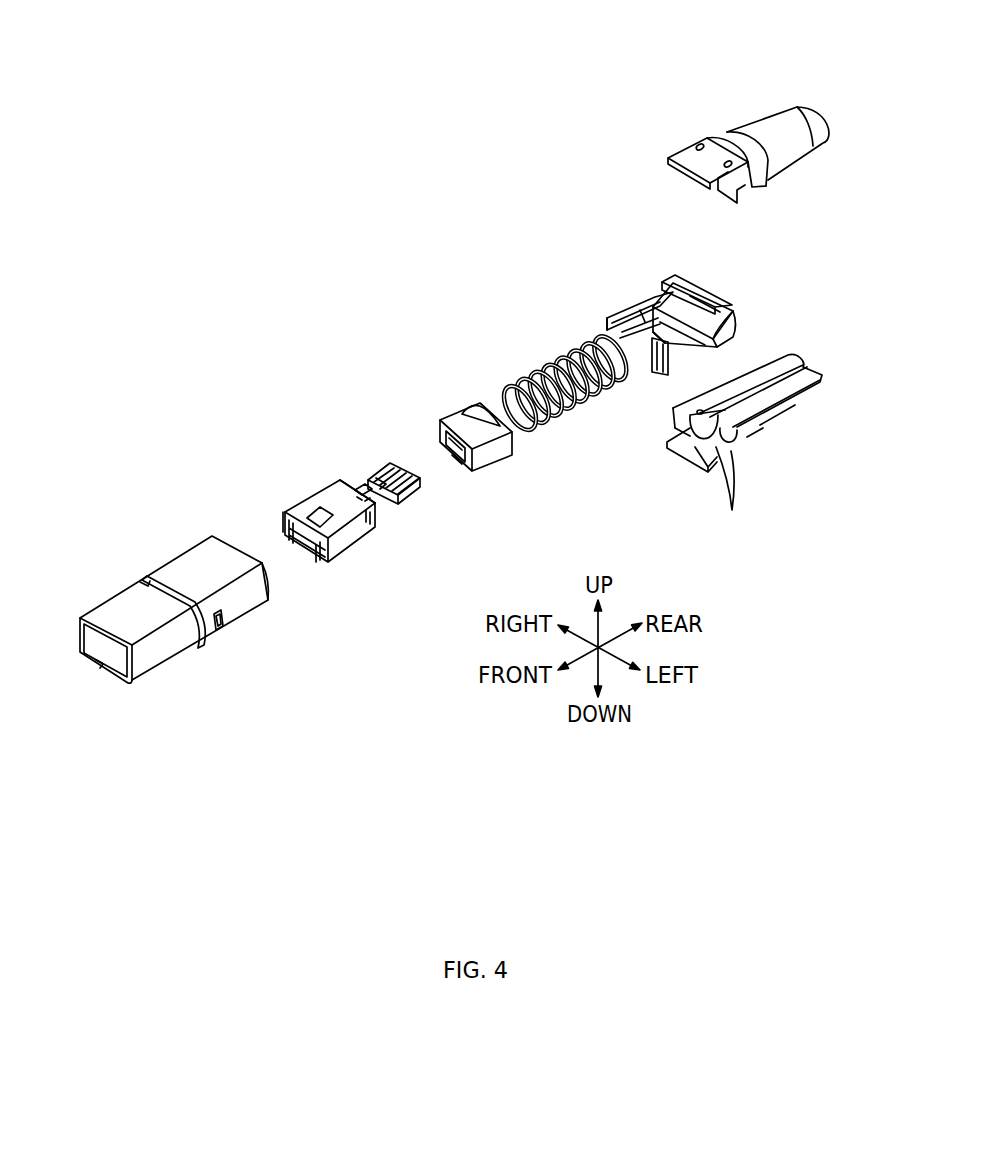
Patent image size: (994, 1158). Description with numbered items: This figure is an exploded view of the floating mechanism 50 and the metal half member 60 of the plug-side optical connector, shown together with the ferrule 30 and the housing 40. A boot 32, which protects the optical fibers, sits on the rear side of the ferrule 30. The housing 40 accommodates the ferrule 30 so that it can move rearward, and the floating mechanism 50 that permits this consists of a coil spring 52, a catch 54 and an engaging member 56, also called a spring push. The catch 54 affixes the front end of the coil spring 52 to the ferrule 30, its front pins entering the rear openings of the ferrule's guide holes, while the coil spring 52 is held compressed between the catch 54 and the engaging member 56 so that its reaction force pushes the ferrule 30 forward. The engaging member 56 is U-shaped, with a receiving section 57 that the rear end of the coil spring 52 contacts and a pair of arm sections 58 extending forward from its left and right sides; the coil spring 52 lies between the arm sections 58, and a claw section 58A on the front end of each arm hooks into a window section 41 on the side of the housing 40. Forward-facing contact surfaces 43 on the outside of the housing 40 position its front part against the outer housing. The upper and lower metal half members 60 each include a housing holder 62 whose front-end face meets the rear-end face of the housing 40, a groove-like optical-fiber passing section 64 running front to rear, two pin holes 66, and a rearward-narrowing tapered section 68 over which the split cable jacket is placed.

The ferrule 30 is at (323, 503).
The boot 32 is at (383, 477).
The housing 40 is at (166, 591).
The window section 41 is at (220, 628).
The contact surface 43 is at (153, 590).
The floating mechanism 50 is at (653, 203).
The coil spring 52 is at (547, 372).
The catch 54 is at (463, 410).
The engaging member 56 is at (636, 292).
The receiving section 57 is at (670, 288).
The arm section 58 is at (643, 287).
The claw section 58A is at (608, 312).
The metal half member 60 is at (724, 109).
The housing holder 62 is at (670, 170).
The optical-fiber passing section 64 is at (765, 393).
The pin hole 66 is at (699, 146).
The tapered section 68 is at (765, 125).